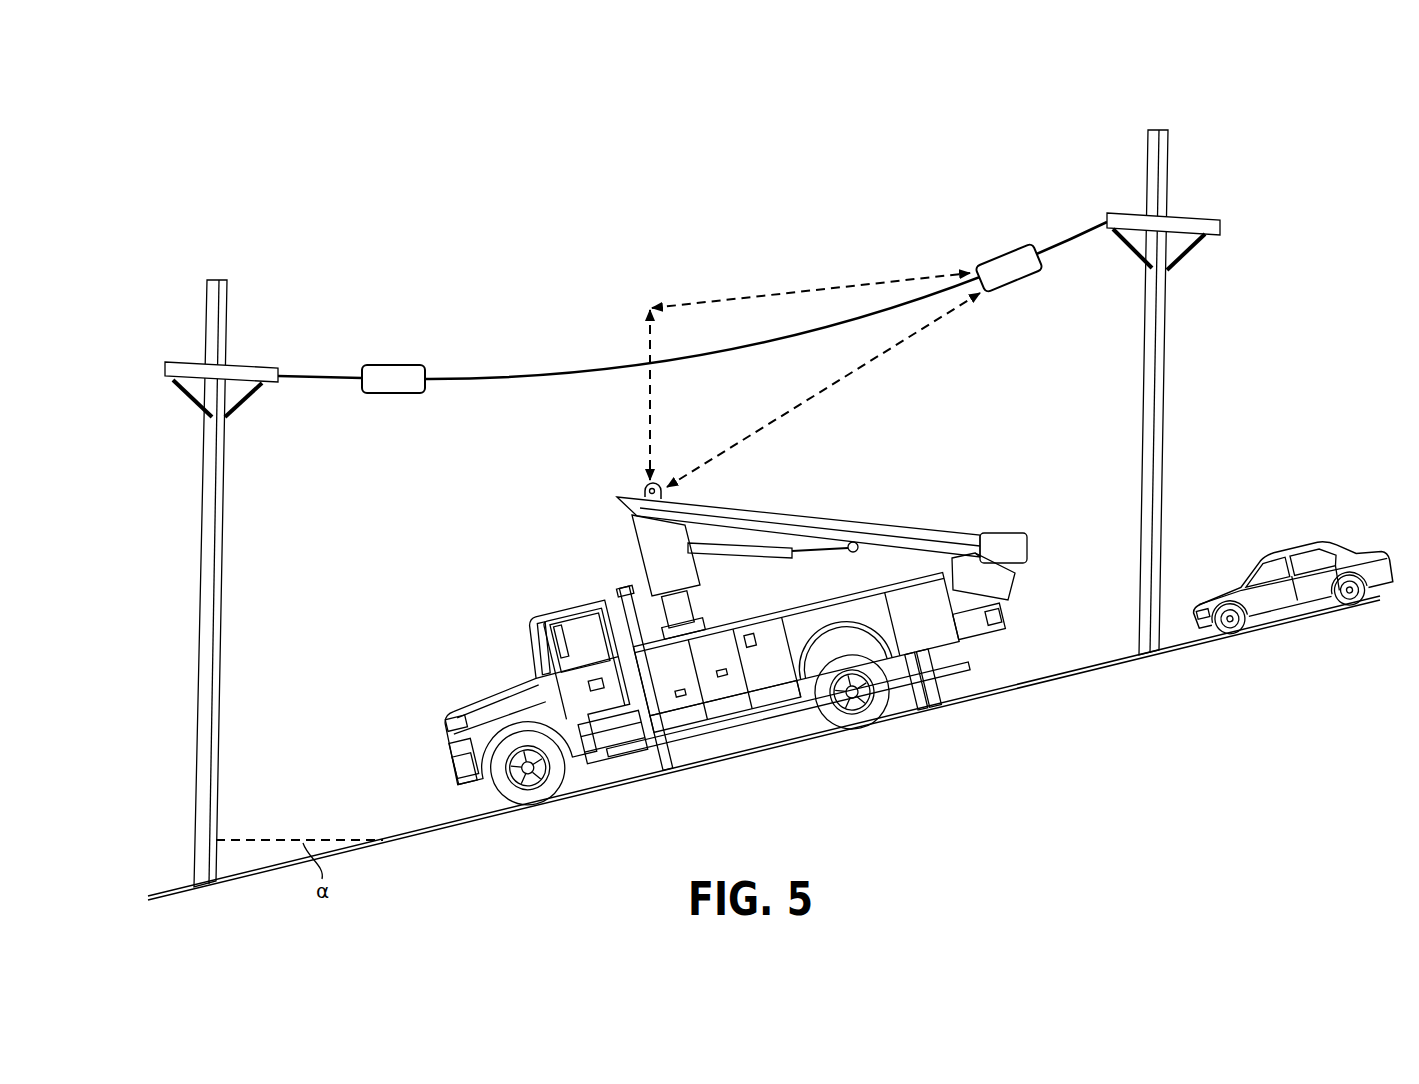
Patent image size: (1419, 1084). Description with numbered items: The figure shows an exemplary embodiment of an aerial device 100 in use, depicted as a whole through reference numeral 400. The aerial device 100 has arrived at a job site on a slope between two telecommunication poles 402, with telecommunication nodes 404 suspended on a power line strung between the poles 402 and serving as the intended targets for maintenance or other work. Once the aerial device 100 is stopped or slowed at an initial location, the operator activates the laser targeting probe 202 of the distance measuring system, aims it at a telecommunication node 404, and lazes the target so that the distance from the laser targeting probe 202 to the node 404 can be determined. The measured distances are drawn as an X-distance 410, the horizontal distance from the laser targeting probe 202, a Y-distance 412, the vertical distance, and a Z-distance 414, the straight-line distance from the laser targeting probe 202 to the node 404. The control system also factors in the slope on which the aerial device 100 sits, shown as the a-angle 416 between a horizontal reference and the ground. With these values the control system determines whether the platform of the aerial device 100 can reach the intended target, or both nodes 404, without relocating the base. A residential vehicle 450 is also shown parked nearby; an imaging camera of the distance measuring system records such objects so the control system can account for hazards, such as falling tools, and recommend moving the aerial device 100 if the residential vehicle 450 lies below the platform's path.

The aerial device 100 is at (458, 652).
The laser targeting probe 202 is at (645, 485).
The depiction of aerial device in use 400 is at (176, 155).
The telecommunication pole 402 is at (219, 280).
The telecommunication node 404 is at (398, 365).
The X-distance 410 is at (835, 288).
The Y-distance 412 is at (660, 423).
The Z-distance 414 is at (867, 378).
The a-angle 416 is at (283, 838).
The residential vehicle 450 is at (1290, 552).